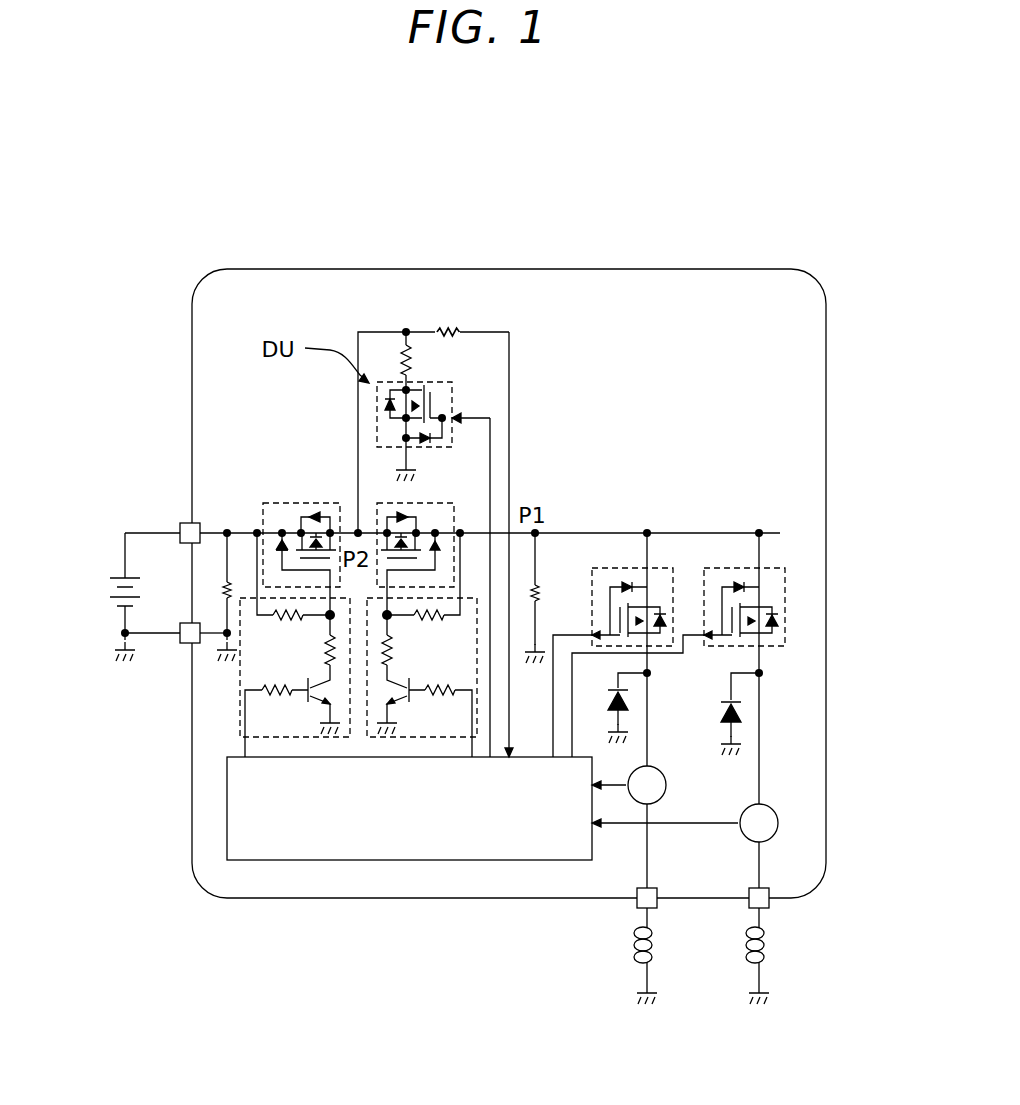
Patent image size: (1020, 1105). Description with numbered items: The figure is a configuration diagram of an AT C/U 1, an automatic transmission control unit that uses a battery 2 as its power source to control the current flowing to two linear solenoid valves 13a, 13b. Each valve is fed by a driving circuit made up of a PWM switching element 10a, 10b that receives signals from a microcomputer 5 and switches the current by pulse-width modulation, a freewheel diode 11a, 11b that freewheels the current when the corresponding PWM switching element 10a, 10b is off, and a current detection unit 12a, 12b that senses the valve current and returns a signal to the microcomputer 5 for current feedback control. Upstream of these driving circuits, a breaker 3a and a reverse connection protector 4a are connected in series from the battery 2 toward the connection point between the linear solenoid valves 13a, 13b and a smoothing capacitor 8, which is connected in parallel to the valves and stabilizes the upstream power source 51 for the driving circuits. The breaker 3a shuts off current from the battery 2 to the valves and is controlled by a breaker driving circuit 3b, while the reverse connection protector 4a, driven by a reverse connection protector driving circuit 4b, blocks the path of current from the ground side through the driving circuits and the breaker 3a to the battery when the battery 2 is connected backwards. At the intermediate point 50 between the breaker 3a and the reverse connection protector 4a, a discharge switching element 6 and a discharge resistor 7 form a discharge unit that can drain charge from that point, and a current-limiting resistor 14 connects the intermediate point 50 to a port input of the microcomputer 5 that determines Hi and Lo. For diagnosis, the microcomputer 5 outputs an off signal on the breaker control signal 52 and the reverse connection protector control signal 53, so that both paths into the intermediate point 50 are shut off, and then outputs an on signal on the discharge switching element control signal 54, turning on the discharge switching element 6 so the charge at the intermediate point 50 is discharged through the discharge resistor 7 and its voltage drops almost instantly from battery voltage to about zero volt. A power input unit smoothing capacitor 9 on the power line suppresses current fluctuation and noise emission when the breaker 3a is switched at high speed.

The AT C/U 1 is at (752, 269).
The battery 2 is at (107, 590).
The breaker 3a is at (270, 497).
The breaker driving circuit 3b is at (191, 779).
The reverse connection protector 4a is at (452, 500).
The reverse connection protector driving circuit 4b is at (352, 779).
The microcomputer 5 is at (520, 800).
The discharge switching element 6 is at (382, 375).
The discharge resistor 7 is at (395, 328).
The smoothing capacitor 8 is at (555, 533).
The power input unit smoothing capacitor 9 is at (228, 572).
The PWM switching element 10a is at (658, 567).
The PWM switching element 10b is at (790, 613).
The freewheel diode 11a is at (627, 697).
The freewheel diode 11b is at (747, 713).
The current detection unit 12a is at (660, 777).
The current detection unit 12b is at (767, 820).
The linear solenoid valve 13a is at (637, 963).
The linear solenoid valve 13b is at (753, 963).
The current-limiting resistor 14 is at (455, 322).
The intermediate point 50 is at (358, 500).
The upstream power source 51 is at (548, 588).
The breaker control signal 52 is at (250, 692).
The reverse connection protector control signal 53 is at (453, 742).
The discharge switching element control signal 54 is at (465, 418).